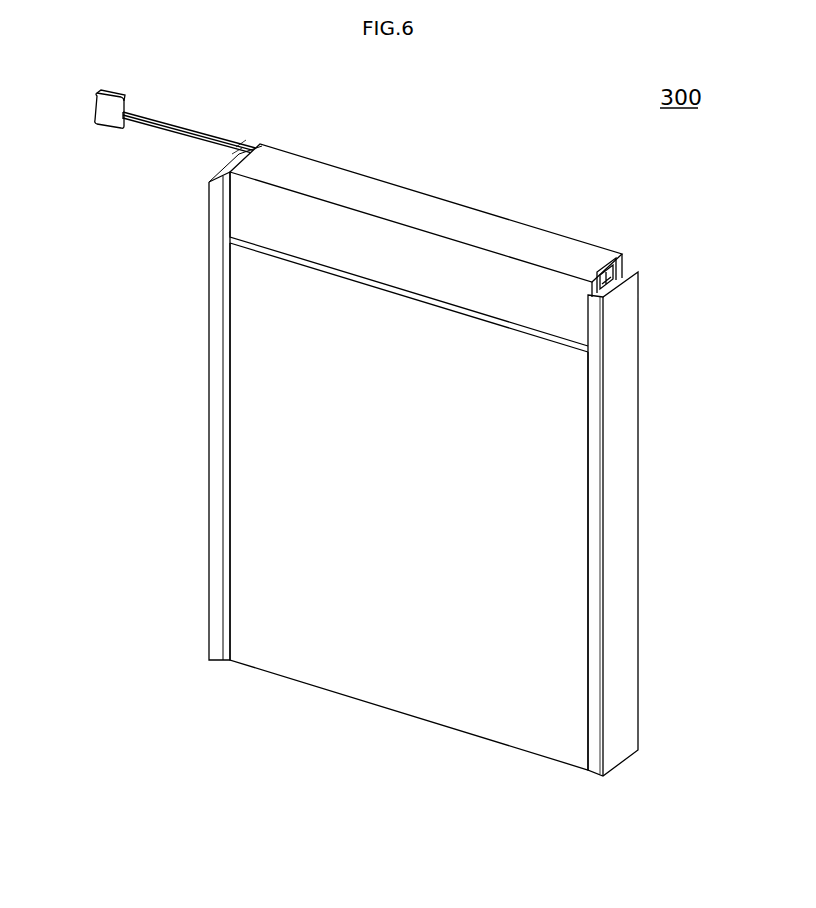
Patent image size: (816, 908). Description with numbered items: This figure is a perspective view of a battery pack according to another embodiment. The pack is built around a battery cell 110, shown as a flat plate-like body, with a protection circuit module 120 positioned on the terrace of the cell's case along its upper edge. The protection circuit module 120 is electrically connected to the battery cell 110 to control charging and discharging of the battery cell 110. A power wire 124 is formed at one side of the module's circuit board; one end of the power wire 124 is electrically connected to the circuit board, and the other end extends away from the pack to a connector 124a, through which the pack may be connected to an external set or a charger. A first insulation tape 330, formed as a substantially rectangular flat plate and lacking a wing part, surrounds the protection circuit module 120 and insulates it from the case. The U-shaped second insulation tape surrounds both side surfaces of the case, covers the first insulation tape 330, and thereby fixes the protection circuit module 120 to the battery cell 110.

The battery cell 110 is at (442, 727).
The protection circuit module 120 is at (628, 272).
The power wire 124 is at (156, 131).
The connector 124a is at (105, 120).
The first insulation tape 330 is at (448, 202).